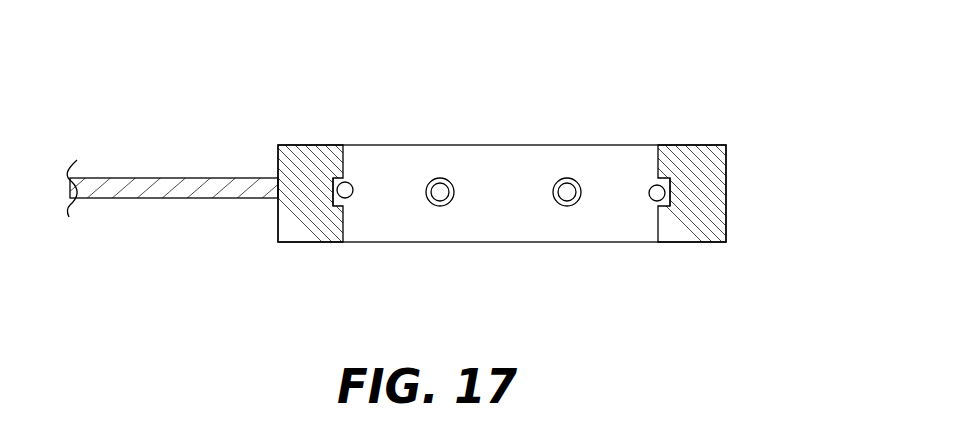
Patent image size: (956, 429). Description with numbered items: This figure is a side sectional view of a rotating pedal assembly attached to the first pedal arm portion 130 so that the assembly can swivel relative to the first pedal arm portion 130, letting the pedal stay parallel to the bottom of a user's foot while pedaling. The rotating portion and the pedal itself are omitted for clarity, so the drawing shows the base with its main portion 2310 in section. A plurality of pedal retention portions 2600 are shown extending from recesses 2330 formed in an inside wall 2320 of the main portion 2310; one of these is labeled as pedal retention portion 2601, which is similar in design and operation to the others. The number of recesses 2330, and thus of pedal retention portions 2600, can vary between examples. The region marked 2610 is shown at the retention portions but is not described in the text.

The first pedal arm portion 130 is at (143, 178).
The inside wall 2320 is at (340, 228).
The recesses 2330 is at (332, 188).
The main portion 2310 is at (693, 147).
The pedal retention portions 2600 is at (346, 182).
The pedal retention portion 2601 is at (650, 185).
The recess 2610 is at (658, 183).